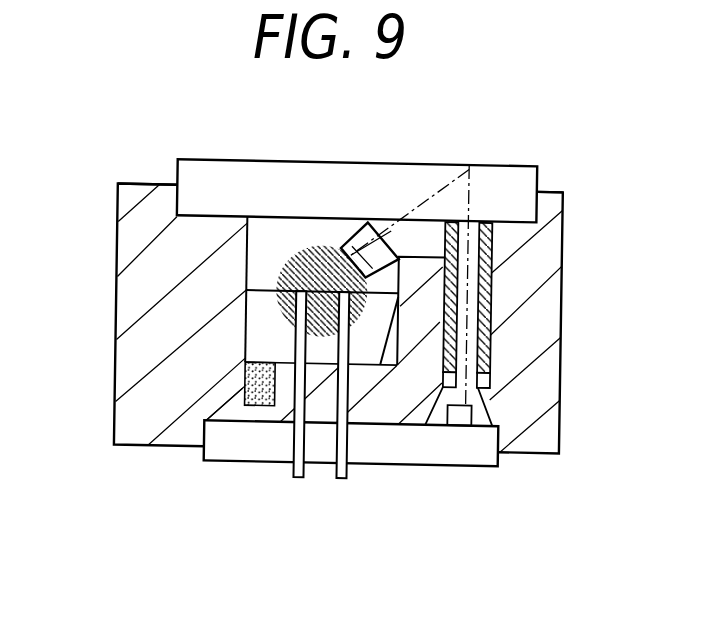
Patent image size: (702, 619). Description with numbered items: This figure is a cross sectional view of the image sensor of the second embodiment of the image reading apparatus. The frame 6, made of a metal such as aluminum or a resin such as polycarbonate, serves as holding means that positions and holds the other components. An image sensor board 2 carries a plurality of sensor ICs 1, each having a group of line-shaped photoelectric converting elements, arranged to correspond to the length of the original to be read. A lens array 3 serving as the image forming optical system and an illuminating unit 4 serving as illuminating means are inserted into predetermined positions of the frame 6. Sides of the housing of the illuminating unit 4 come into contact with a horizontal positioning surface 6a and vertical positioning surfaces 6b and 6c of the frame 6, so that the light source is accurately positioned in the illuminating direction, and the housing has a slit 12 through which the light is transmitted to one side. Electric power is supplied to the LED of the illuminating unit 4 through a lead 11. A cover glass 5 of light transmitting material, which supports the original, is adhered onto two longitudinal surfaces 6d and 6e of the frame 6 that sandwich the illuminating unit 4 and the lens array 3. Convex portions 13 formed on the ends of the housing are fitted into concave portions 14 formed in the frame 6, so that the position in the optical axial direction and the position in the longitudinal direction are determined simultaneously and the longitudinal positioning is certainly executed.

The sensor IC 1 is at (463, 416).
The image sensor board 2 is at (474, 458).
The lens array 3 is at (480, 248).
The illuminating unit 4 is at (278, 238).
The cover glass 5 is at (233, 178).
The frame 6 is at (128, 240).
The horizontal positioning surface 6a is at (370, 366).
The vertical positioning surface 6b is at (247, 264).
The vertical positioning surface 6c is at (399, 332).
The longitudinal surface of frame 6d is at (206, 217).
The longitudinal surface of frame 6e is at (505, 222).
The lead 11 is at (342, 479).
The slit 12 is at (367, 230).
The convex portion 13 is at (258, 404).
The concave portion 14 is at (244, 382).